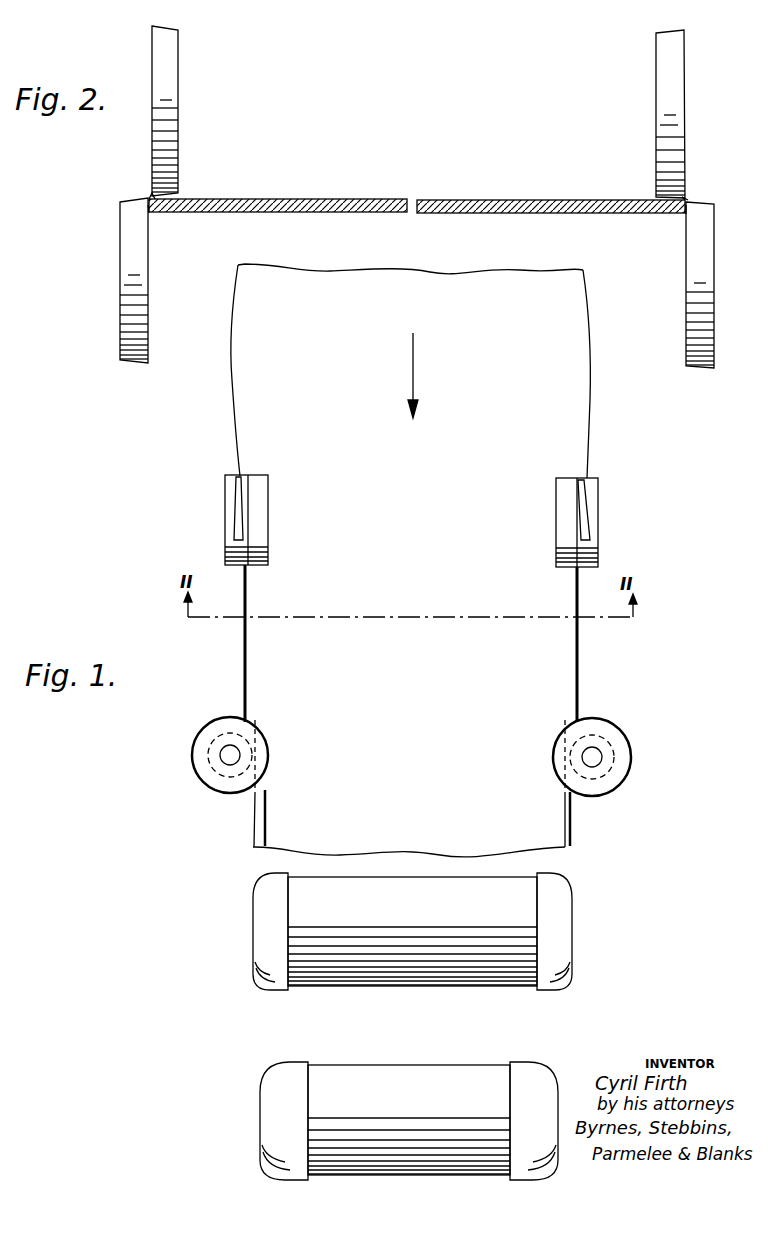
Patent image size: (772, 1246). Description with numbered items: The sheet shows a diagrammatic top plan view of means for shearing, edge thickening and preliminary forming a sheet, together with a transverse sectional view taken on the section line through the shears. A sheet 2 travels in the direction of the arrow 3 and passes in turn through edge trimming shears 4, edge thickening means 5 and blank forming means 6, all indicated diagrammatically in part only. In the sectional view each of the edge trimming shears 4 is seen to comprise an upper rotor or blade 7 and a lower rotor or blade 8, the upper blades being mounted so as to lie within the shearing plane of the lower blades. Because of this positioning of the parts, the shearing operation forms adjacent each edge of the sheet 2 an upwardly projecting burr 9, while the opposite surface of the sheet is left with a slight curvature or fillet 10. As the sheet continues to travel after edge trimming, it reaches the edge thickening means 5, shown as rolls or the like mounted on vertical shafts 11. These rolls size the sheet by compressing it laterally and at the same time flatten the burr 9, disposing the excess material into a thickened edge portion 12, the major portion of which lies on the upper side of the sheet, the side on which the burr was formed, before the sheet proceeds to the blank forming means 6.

In FIG. 2, the sheet 2 is at (376, 198).
In FIG. 1, the sheet 2 is at (580, 435).
In FIG. 1, the arrow 3 is at (413, 378).
In FIG. 1, the edge trimming shears 4 is at (262, 510).
In FIG. 1, the edge thickening means 5 is at (205, 732).
In FIG. 1, the blank forming means 6 is at (432, 967).
In FIG. 2, the upper rotor or blade 7 is at (177, 82).
In FIG. 2, the lower rotor or blade 8 is at (133, 305).
In FIG. 2, the burr 9 is at (150, 197).
In FIG. 1, the burr 9 is at (243, 662).
In FIG. 2, the fillet 10 is at (150, 212).
In FIG. 1, the vertical shafts 11 is at (228, 755).
In FIG. 1, the thickened edge portion 12 is at (258, 820).